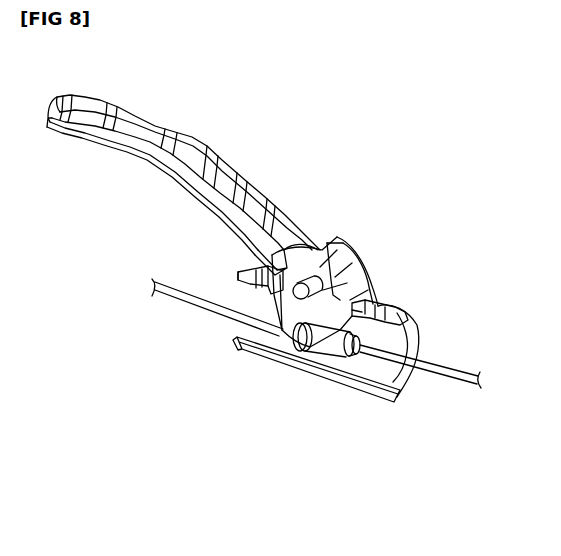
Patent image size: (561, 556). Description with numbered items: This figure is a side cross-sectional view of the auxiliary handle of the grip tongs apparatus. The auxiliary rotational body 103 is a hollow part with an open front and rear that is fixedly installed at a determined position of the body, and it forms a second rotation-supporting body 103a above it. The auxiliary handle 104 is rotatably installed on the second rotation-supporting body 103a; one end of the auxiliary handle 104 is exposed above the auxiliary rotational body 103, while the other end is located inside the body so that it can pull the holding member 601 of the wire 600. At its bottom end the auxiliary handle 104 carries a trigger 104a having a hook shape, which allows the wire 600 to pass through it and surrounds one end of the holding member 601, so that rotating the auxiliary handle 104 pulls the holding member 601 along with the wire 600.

The auxiliary handle 104 is at (233, 200).
The trigger 104a is at (283, 330).
The auxiliary rotational body 103 is at (253, 352).
The second rotation-supporting body 103a is at (357, 275).
The holding member 601 is at (320, 347).
The wire 600 is at (452, 378).